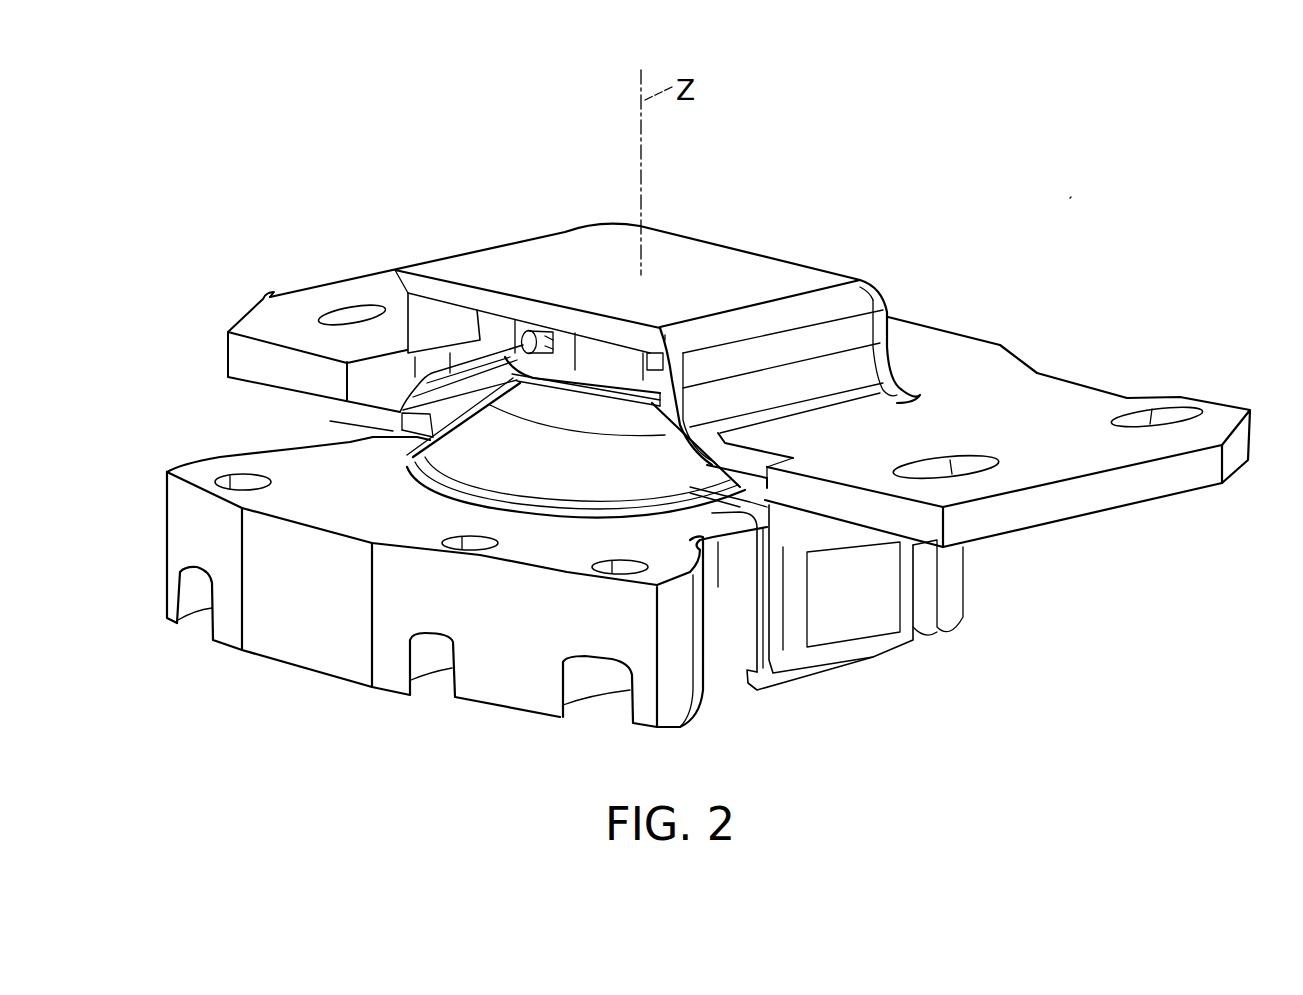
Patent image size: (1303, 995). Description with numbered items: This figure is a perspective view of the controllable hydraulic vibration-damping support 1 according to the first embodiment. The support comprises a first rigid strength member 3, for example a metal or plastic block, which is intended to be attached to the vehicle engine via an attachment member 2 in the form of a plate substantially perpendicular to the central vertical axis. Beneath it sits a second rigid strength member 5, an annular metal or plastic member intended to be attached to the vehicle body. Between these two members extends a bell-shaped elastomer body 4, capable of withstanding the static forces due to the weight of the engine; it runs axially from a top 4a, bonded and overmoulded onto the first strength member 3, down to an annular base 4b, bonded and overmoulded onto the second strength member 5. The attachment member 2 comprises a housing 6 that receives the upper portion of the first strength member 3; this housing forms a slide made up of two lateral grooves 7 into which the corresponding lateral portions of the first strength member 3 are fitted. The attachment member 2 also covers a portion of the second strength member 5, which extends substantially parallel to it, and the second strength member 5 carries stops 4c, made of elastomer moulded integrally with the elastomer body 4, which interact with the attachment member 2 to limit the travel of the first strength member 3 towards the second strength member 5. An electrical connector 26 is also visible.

The controllable hydraulic vibration-damping support 1 is at (1069, 198).
The attachment member 2 is at (1068, 403).
The first rigid strength member 3 is at (607, 360).
The elastomer body 4 is at (585, 463).
The top 4a is at (523, 383).
The annular base 4b is at (547, 500).
The stops 4c is at (430, 422).
The second rigid strength member 5 is at (290, 482).
The housing 6 is at (458, 323).
The lateral grooves 7 is at (350, 380).
The electrical connector 26 is at (538, 330).